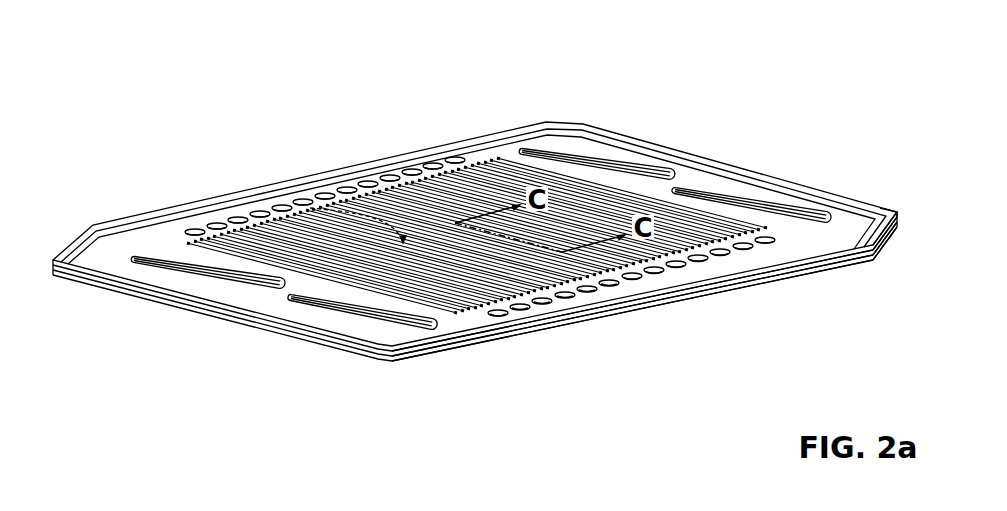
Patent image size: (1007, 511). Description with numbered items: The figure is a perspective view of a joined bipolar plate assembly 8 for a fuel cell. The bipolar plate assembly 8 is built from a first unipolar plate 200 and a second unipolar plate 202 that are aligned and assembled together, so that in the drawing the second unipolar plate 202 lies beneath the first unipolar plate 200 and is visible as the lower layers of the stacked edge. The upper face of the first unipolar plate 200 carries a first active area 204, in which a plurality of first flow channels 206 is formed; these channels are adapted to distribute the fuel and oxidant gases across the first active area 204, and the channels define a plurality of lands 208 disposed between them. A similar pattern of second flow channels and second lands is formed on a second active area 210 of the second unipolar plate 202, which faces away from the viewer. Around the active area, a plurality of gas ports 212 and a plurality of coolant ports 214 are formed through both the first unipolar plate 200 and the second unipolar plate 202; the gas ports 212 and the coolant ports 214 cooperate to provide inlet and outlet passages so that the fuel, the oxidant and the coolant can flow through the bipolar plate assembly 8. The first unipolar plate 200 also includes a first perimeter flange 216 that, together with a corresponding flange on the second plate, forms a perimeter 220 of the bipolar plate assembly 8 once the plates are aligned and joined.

The bipolar plate assembly 8 is at (610, 102).
The first unipolar plate 200 is at (702, 282).
The second unipolar plate 202 is at (642, 323).
The first active area 204 is at (258, 212).
The first flow channels 206 is at (217, 227).
The lands 208 is at (255, 262).
The second active area 210 is at (349, 268).
The gas ports 212 is at (543, 170).
The coolant ports 214 is at (452, 160).
The first perimeter flange 216 is at (895, 210).
The perimeter 220 is at (890, 238).